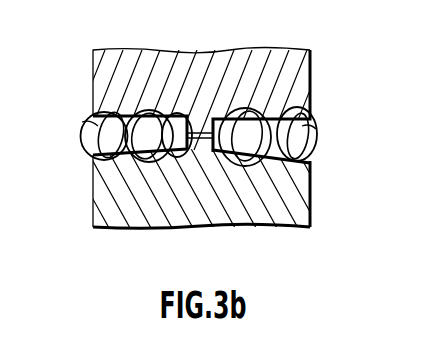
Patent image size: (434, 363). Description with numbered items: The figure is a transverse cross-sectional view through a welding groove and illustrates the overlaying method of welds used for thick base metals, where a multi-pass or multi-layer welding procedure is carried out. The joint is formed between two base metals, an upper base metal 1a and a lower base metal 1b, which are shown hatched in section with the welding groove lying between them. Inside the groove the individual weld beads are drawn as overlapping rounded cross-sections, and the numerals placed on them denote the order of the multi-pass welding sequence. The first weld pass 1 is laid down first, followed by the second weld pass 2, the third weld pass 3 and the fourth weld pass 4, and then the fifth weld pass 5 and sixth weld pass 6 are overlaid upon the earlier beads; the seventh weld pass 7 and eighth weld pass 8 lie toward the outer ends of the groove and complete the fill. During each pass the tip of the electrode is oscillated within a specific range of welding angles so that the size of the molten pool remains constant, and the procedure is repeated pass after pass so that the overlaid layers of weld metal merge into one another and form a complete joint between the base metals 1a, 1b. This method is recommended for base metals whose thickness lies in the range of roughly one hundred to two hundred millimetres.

The first weld pass 1 is at (177, 164).
The base metal 1a is at (174, 56).
The base metal 1b is at (134, 228).
The second weld pass 2 is at (205, 164).
The third weld pass 3 is at (242, 166).
The fourth weld pass 4 is at (146, 165).
The fifth weld pass 5 is at (117, 165).
The sixth weld pass 6 is at (277, 166).
The seventh weld pass 7 is at (313, 157).
The eighth weld pass 8 is at (92, 153).